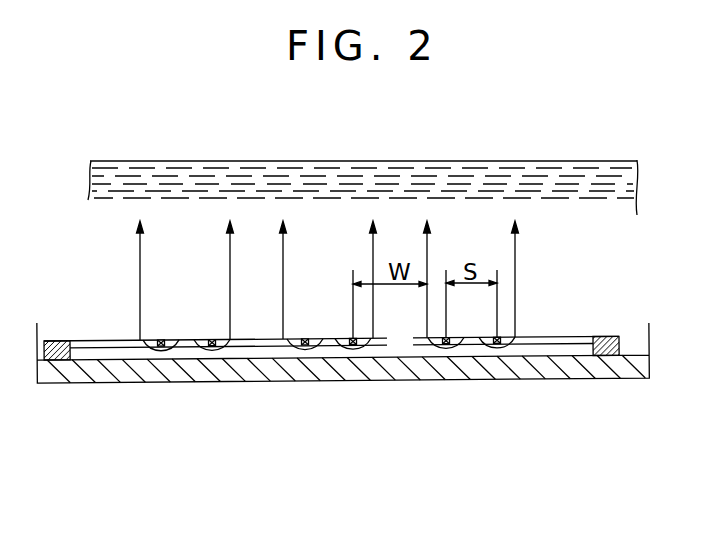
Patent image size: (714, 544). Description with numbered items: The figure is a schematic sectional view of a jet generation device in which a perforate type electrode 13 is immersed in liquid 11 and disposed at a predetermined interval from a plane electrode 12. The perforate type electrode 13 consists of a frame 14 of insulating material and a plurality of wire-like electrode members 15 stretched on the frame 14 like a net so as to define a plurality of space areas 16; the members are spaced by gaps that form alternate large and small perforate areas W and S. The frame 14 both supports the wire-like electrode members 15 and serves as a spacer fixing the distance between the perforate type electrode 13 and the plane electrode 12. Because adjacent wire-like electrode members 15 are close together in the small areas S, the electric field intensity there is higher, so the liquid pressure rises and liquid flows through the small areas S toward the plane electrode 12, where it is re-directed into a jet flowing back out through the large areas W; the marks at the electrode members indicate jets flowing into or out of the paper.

The liquid 11 is at (195, 232).
The plane electrode 12 is at (518, 373).
The perforate type electrode 13 is at (212, 339).
The frame 14 is at (58, 341).
The wire-like electrode members 15 is at (307, 331).
The space areas 16 is at (347, 337).